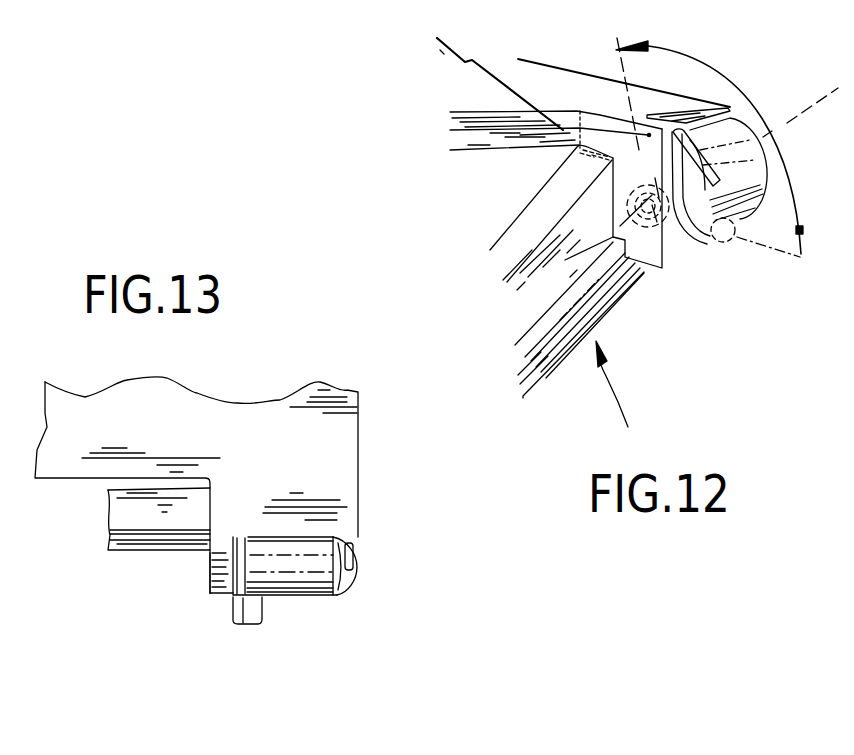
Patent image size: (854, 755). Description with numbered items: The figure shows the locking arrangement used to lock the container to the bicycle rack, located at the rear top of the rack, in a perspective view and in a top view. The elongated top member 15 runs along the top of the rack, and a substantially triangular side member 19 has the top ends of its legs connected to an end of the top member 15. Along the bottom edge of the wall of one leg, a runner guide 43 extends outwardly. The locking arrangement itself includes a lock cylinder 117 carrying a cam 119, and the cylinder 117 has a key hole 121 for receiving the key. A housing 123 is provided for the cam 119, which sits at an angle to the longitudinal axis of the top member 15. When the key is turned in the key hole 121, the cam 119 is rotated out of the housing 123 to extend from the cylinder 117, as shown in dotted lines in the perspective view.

In FIG. 12, the elongated top member 15 is at (477, 137).
In FIG. 13, the elongated top member 15 is at (262, 482).
In FIG. 12, the side member 19 is at (622, 395).
In FIG. 12, the runner guide 43 is at (535, 340).
In FIG. 13, the lock cylinder 117 is at (315, 578).
In FIG. 12, the cam 119 is at (693, 284).
In FIG. 13, the cam 119 is at (252, 617).
In FIG. 13, the key hole 121 is at (353, 558).
In FIG. 12, the housing 123 is at (487, 70).
In FIG. 13, the housing 123 is at (214, 585).